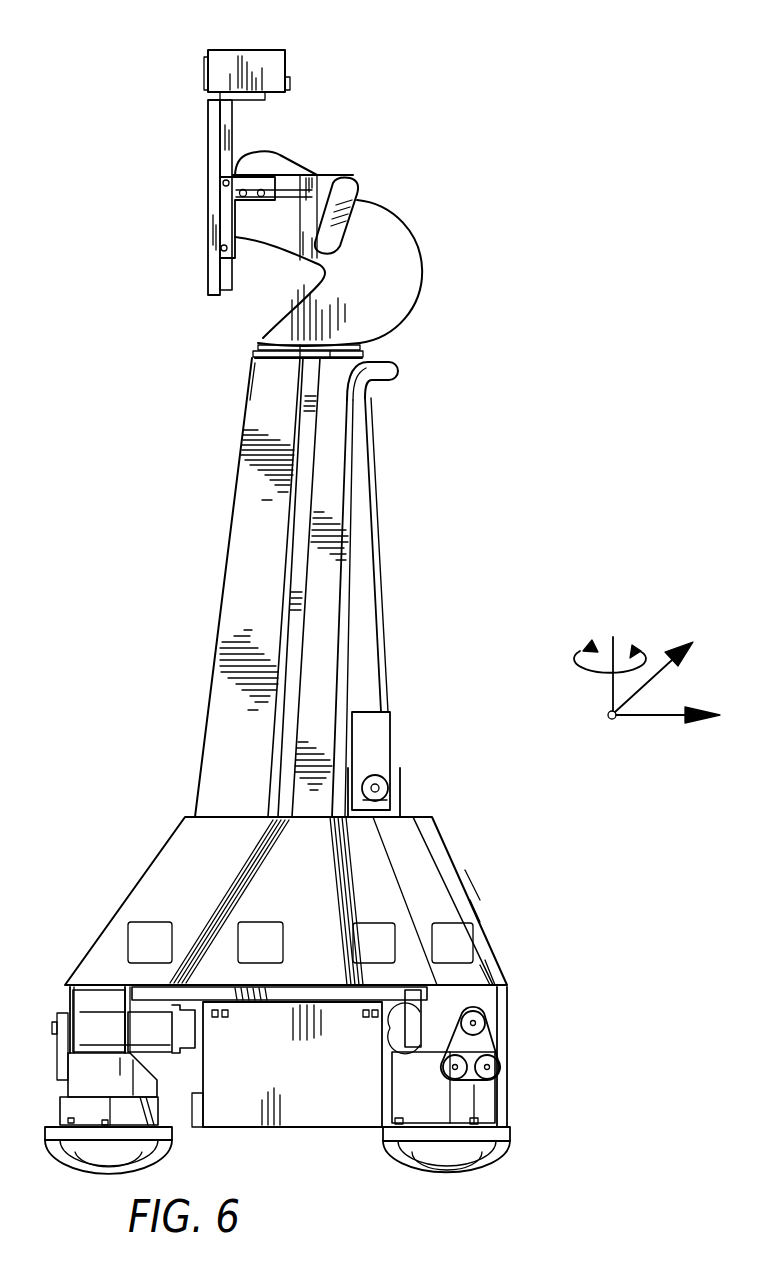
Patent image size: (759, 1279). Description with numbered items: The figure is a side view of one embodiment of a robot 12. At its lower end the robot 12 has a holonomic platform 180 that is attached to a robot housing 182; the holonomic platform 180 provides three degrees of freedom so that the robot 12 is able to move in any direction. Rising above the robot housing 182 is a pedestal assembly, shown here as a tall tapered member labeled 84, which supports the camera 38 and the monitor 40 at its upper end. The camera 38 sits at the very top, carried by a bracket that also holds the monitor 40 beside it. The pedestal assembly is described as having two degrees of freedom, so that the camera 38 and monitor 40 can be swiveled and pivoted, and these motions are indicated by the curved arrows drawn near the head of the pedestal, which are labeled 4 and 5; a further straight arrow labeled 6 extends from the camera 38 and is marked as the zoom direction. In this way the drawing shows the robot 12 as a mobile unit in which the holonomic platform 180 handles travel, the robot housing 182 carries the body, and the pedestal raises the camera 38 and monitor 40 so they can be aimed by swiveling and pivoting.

The pan rotation direction arrow 4 is at (233, 313).
The tilt rotation direction arrow 5 is at (255, 182).
The zoom direction arrow 6 is at (205, 32).
The robot 12 is at (495, 842).
The camera 38 is at (228, 80).
The monitor 40 is at (216, 177).
The mast 84 is at (195, 483).
The holonomic platform 180 is at (349, 1135).
The robot housing 182 is at (148, 870).